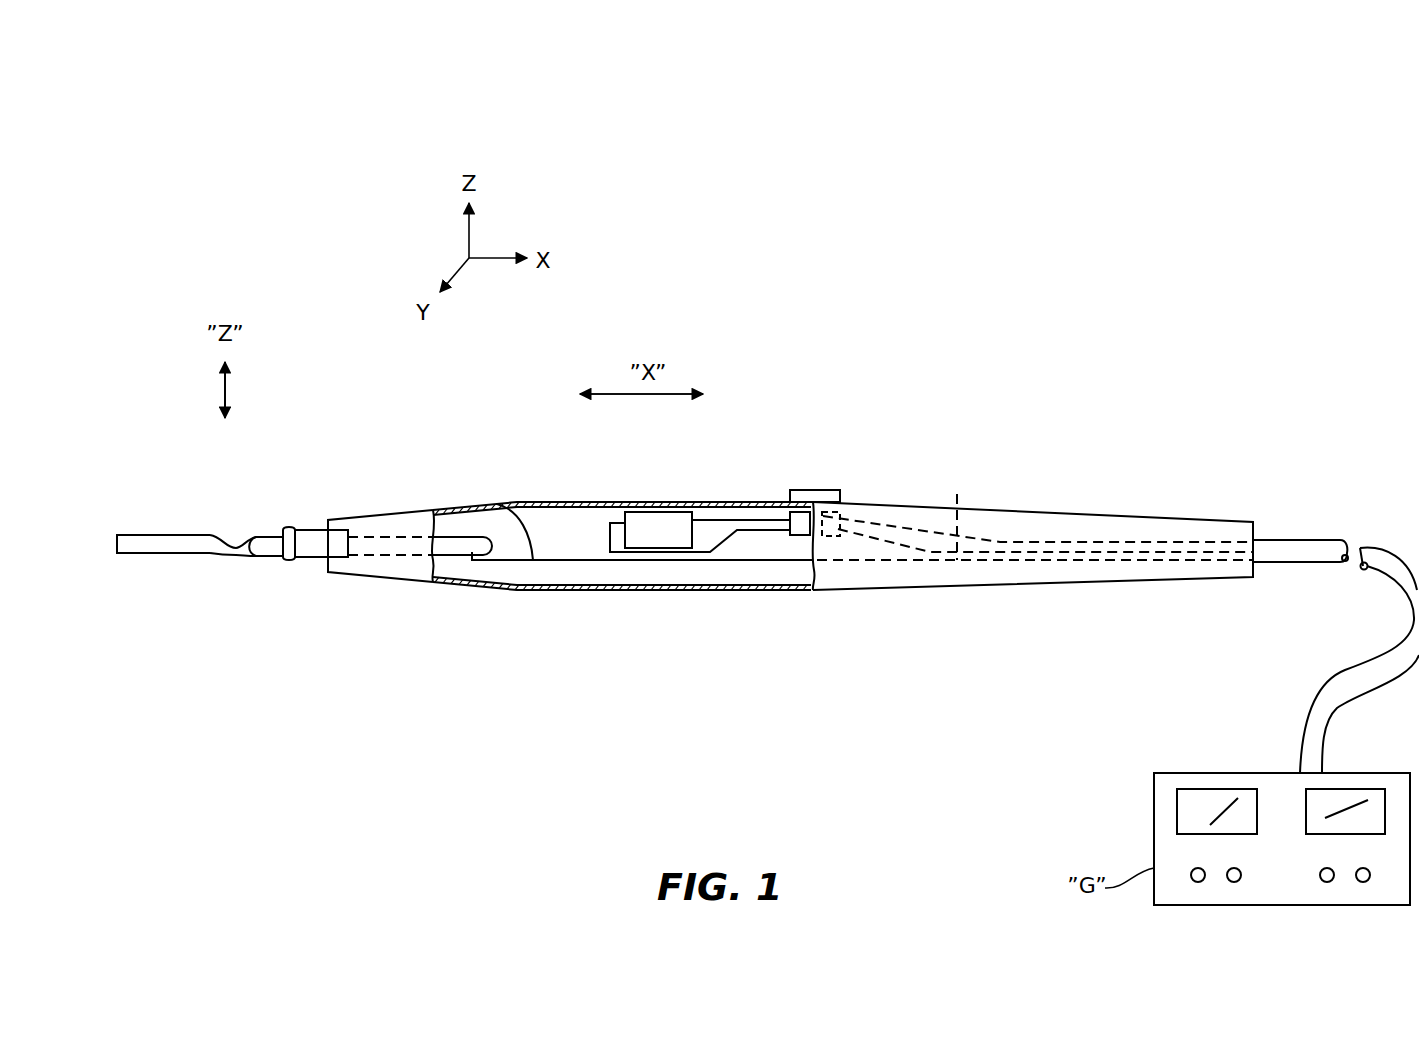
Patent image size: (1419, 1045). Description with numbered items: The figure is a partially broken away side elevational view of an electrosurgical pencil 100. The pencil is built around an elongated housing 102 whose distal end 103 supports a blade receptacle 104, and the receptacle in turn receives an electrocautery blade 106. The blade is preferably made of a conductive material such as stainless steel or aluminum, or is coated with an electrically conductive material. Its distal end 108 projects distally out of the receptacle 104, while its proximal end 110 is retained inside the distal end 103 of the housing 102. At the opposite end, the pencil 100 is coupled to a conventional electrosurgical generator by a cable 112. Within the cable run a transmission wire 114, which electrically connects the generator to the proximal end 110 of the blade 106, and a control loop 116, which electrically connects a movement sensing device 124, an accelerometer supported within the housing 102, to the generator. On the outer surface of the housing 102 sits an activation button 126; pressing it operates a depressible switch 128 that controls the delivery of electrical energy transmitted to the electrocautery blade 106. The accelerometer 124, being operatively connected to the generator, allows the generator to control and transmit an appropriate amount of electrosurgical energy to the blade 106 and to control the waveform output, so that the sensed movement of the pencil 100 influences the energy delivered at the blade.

The electrosurgical pencil 100 is at (850, 368).
The elongated housing 102 is at (554, 496).
The distal end 103 is at (399, 583).
The blade receptacle 104 is at (313, 526).
The electrocautery blade 106 is at (270, 524).
The distal end 108 is at (143, 533).
The proximal end 110 is at (426, 512).
The cable 112 is at (1331, 540).
The transmission wire 114 is at (501, 507).
The control loop 116 is at (917, 528).
The movement sensing device 124 is at (676, 517).
The activation button 126 is at (818, 488).
The depressible switch 128 is at (826, 517).